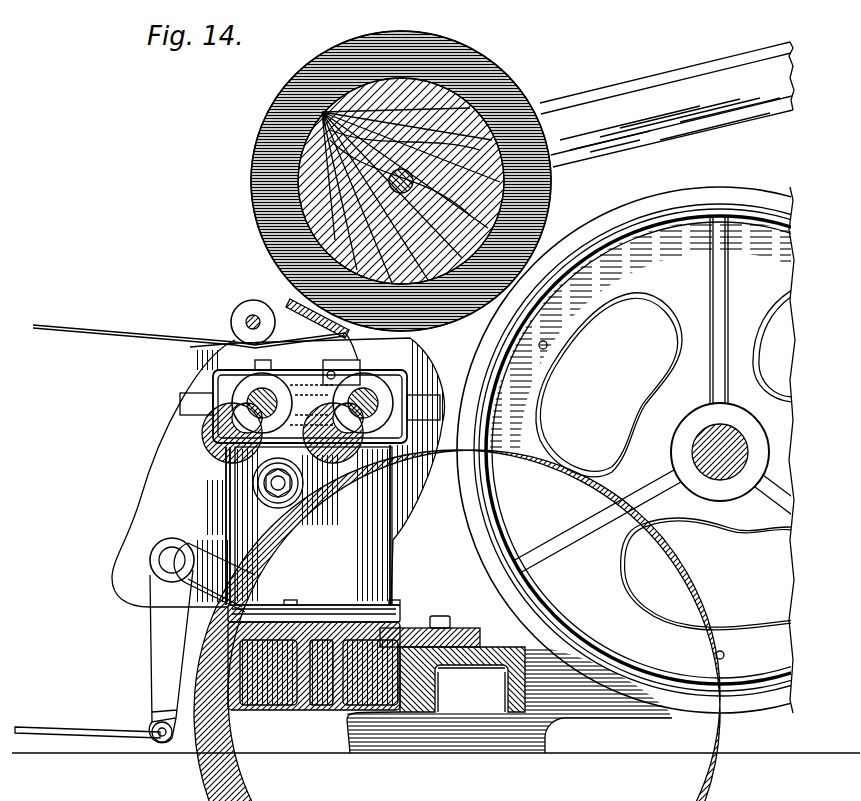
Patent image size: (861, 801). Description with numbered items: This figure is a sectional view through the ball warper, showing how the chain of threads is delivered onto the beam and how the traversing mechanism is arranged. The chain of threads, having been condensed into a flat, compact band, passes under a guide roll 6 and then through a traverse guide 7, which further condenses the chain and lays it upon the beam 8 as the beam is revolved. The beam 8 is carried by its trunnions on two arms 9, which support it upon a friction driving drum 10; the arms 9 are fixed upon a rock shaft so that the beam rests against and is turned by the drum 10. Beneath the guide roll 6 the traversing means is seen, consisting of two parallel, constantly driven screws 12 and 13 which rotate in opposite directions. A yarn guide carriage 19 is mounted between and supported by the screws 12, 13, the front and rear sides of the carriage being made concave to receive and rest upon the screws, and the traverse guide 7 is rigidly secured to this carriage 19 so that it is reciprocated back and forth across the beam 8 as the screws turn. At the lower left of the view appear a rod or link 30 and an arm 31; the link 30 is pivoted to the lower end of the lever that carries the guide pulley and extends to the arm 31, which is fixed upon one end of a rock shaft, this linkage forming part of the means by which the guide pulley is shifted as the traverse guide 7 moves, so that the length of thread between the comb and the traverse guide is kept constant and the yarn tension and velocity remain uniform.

The guide roll 6 is at (244, 303).
The traverse guide 7 is at (297, 305).
The beam 8 is at (447, 101).
The arms 9 is at (642, 93).
The friction driving drum 10 is at (708, 192).
The screw 12 is at (383, 386).
The screw 13 is at (252, 412).
The yarn guide carriage 19 is at (307, 427).
The rod or link 30 is at (59, 728).
The arm 31 is at (155, 666).